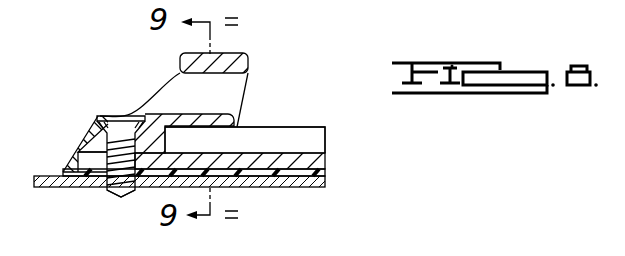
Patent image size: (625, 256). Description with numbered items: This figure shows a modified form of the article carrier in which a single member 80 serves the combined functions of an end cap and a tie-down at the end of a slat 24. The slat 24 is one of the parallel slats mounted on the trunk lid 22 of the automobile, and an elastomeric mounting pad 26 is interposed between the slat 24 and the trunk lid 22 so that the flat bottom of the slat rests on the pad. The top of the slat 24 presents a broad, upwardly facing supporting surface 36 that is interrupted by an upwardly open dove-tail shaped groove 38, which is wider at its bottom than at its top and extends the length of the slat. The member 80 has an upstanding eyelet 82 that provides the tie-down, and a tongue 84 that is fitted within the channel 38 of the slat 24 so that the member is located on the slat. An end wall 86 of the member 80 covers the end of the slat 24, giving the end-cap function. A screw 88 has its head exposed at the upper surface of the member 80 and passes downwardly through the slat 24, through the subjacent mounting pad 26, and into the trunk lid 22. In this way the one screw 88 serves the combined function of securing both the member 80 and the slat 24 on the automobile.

The trunk lid 22 is at (307, 188).
The slat 24 is at (307, 157).
The elastomeric mounting pad 26 is at (317, 177).
The supporting surface 36 is at (307, 127).
The dove-tail shaped groove 38 is at (247, 137).
The member 80 is at (97, 127).
The eyelet 82 is at (222, 97).
The tongue 84 is at (154, 143).
The end wall 86 is at (76, 150).
The screw 88 is at (118, 184).